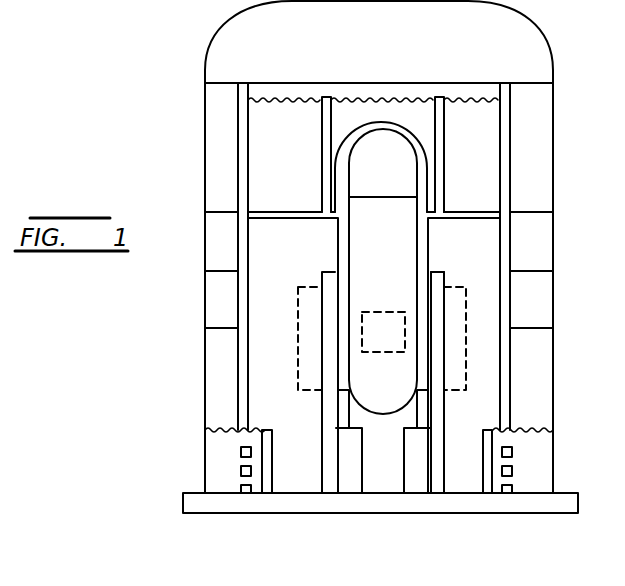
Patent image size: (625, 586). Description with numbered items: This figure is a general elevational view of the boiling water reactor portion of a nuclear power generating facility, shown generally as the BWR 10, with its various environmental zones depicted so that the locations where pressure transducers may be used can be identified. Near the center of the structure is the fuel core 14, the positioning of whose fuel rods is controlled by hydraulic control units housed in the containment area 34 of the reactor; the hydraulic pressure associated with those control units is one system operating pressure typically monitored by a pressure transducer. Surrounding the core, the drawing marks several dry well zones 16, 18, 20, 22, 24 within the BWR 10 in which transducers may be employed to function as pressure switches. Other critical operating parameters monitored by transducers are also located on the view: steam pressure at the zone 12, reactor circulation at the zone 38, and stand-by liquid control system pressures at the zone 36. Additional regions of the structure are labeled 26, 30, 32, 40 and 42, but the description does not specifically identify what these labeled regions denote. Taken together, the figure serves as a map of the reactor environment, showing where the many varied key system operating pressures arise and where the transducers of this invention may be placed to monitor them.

The BWR 10 is at (148, 70).
The steam pressure zone 12 is at (396, 260).
The fuel core 14 is at (383, 352).
The dry well zone 16 is at (300, 260).
The dry well zone 18 is at (300, 355).
The dry well zone 20 is at (389, 470).
The dry well zone 22 is at (396, 152).
The dry well zone 24 is at (424, 412).
The coolant pipe 26 is at (426, 284).
The containment dome 30 is at (397, 41).
The lower wall section 32 is at (530, 372).
The containment area 34 is at (537, 303).
The stand-by liquid control system zone 36 is at (535, 249).
The reactor circulation zone 38 is at (535, 160).
The upper right compartment 40 is at (486, 162).
The foundation block 42 is at (527, 473).